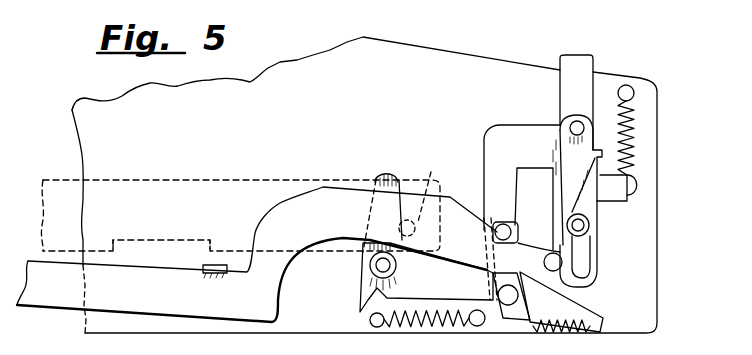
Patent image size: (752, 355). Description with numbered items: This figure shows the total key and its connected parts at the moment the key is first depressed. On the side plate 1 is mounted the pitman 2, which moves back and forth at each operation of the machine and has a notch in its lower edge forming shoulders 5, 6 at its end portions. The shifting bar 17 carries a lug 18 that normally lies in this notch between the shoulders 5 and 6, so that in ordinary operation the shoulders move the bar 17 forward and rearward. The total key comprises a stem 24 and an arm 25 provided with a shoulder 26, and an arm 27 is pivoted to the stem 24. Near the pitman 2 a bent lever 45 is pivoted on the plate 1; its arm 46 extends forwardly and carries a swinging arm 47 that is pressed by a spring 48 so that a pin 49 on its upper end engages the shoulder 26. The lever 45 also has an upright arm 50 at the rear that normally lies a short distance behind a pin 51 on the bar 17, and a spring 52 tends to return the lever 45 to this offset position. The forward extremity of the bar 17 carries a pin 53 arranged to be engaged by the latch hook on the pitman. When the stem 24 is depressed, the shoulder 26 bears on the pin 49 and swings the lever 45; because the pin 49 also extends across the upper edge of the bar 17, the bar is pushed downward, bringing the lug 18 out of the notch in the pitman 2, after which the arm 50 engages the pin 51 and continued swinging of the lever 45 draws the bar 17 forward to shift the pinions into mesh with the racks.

The side plate 1 is at (337, 185).
The pitman 2 is at (152, 181).
The shoulder 5 is at (114, 252).
The shoulder 6 is at (208, 251).
The shifting bar 17 is at (257, 246).
The lug 18 is at (214, 275).
The stem 24 is at (568, 84).
The arm 25 is at (500, 139).
The shoulder 26 is at (513, 226).
The arm 27 is at (598, 201).
The bent lever 45 is at (426, 277).
The arm 46 is at (562, 311).
The swinging arm 47 is at (494, 289).
The spring 48 is at (556, 331).
The pin 49 is at (512, 233).
The upright arm 50 is at (383, 176).
The pin 51 is at (414, 220).
The spring 52 is at (432, 322).
The pin 53 is at (562, 265).